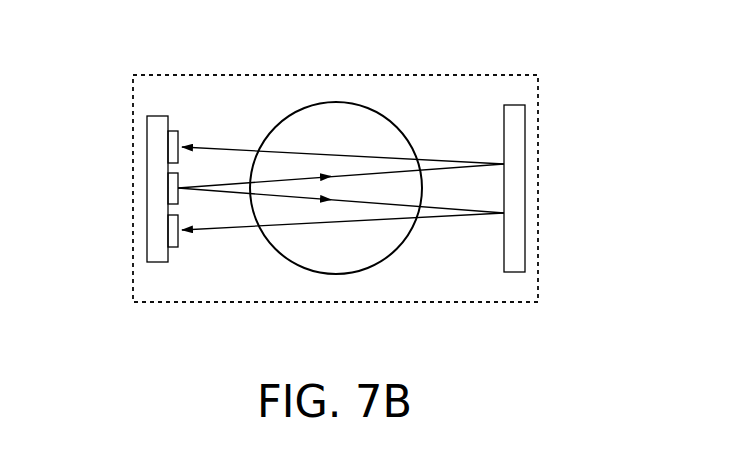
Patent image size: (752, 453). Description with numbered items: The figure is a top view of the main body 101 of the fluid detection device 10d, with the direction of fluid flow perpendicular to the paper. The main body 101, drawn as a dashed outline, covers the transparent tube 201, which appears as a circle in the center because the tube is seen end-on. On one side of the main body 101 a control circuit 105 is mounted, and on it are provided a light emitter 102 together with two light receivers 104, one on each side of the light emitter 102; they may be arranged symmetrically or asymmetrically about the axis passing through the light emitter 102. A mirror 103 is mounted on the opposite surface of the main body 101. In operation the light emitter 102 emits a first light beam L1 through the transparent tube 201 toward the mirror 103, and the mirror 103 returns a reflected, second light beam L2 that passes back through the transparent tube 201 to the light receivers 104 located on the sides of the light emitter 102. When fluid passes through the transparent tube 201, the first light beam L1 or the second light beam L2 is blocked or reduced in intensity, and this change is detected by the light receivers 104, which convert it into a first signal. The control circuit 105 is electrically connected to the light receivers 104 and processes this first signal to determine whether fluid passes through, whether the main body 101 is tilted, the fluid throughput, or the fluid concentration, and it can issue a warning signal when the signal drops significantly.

The fluid detection device 10d is at (108, 87).
The main body 101 is at (547, 90).
The light emitter 102 is at (170, 187).
The mirror 103 is at (517, 187).
The light receiver 104 is at (170, 143).
The control circuit 105 is at (155, 254).
The transparent tube 201 is at (337, 103).
The first light beam L1 is at (298, 197).
The second light beam L2 is at (358, 220).